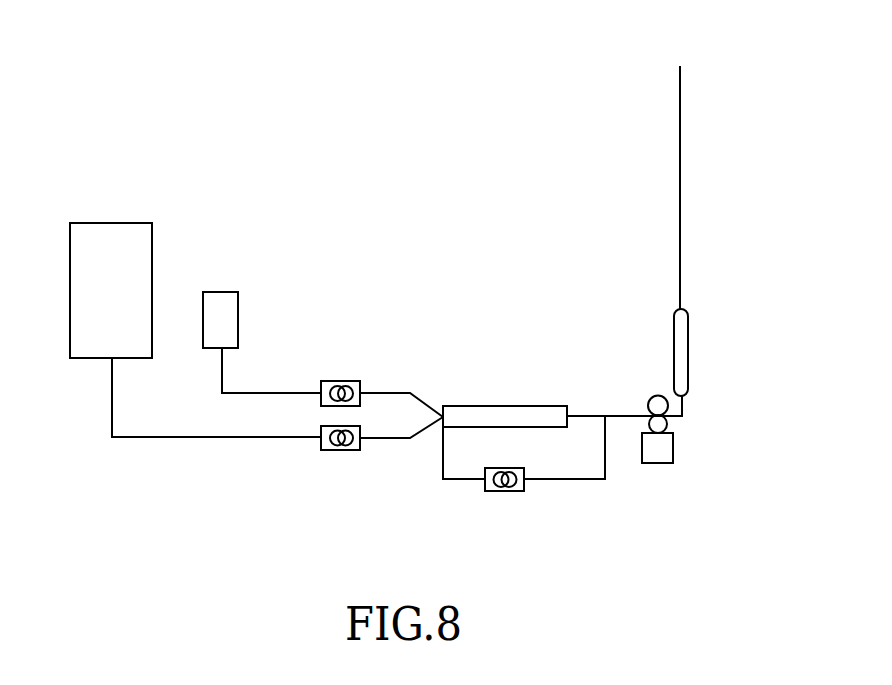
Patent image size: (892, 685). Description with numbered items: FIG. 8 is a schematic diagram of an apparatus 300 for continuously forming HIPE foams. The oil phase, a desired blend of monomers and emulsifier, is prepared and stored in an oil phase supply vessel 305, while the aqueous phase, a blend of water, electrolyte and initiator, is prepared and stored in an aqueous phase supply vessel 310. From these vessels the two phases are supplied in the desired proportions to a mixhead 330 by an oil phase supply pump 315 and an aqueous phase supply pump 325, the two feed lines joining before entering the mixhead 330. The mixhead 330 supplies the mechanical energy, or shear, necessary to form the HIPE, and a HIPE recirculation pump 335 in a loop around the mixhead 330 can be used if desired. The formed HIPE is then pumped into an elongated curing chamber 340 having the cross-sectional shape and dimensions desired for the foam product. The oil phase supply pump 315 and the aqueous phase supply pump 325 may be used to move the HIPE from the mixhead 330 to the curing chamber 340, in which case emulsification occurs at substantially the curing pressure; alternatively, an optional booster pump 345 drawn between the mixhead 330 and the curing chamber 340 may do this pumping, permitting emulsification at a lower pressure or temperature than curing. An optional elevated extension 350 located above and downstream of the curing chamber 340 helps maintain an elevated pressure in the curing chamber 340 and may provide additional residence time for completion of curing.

The apparatus 300 is at (484, 235).
The oil phase supply vessel 305 is at (218, 291).
The aqueous phase supply vessel 310 is at (100, 222).
The oil phase supply pump 315 is at (340, 390).
The aqueous phase supply pump 325 is at (347, 451).
The mixhead 330 is at (470, 405).
The HIPE recirculation pump 335 is at (511, 492).
The curing chamber 340 is at (688, 357).
The booster pump 345 is at (657, 463).
The elevated extension 350 is at (680, 163).